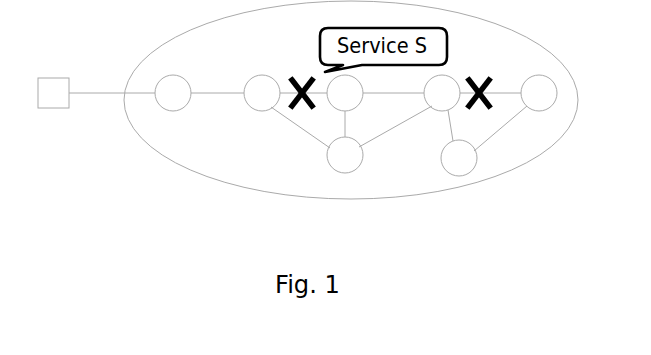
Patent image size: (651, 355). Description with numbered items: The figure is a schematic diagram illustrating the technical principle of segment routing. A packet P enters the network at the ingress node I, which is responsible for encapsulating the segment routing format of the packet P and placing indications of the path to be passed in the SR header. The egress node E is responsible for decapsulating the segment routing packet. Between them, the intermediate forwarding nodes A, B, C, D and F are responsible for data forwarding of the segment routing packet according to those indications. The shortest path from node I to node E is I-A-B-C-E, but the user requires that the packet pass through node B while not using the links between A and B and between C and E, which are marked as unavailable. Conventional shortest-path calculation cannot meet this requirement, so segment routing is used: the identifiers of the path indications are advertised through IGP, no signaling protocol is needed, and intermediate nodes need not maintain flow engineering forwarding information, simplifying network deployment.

The packet P is at (53, 93).
The ingress node I is at (173, 93).
The intermediate forwarding node A is at (262, 93).
The intermediate forwarding node B is at (345, 93).
The intermediate forwarding node C is at (442, 93).
The intermediate forwarding node D is at (345, 155).
The egress node E is at (539, 93).
The intermediate forwarding node F is at (459, 158).